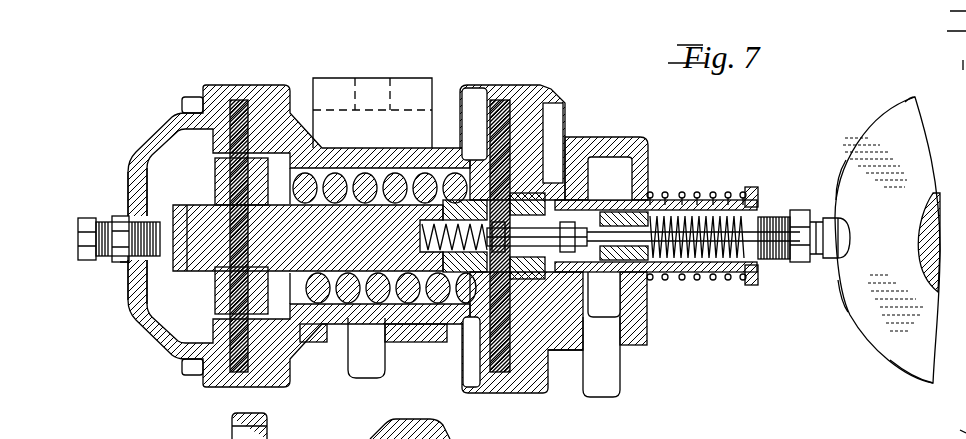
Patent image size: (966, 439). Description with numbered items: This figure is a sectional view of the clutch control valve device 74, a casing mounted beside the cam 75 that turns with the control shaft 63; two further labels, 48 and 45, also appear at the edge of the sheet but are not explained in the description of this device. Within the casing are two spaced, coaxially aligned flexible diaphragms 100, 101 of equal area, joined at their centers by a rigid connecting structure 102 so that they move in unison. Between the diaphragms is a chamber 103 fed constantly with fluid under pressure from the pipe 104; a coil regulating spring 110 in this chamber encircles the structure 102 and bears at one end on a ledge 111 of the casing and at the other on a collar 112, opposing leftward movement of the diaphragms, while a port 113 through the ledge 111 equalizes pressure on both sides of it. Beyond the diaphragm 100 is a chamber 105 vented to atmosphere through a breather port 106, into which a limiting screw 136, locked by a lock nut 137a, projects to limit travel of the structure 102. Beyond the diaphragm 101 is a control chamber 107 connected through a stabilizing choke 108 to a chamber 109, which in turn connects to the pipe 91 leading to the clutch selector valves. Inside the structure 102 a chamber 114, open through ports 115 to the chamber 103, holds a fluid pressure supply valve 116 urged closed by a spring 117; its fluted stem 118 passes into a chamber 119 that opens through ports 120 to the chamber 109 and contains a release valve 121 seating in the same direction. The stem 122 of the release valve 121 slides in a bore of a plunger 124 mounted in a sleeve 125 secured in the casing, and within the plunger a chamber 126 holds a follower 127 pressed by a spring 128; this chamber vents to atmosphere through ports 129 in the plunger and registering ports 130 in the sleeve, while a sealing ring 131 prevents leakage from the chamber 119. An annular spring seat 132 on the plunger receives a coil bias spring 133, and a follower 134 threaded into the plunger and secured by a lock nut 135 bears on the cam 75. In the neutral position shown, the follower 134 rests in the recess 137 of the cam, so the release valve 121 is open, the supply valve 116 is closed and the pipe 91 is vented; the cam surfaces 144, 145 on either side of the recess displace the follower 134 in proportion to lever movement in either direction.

The flexible diaphragm 100 is at (212, 337).
The chamber 105 is at (153, 288).
The breather port 106 is at (157, 347).
The clutch control valve device 74 is at (191, 389).
The limiting screw 136 is at (103, 217).
The lock nut 137a is at (127, 260).
The port 113 is at (291, 162).
The ledge 111 is at (308, 156).
The coil regulating spring 110 is at (360, 174).
The rigid connecting structure 102 is at (330, 335).
The pipe 104 is at (352, 362).
The chamber 103 is at (393, 344).
The ports 115 is at (420, 235).
The collar 112 is at (473, 173).
The flexible diaphragm 101 is at (530, 330).
The control chamber 107 is at (547, 140).
The stabilizing choke 108 is at (570, 163).
The chamber 109 is at (613, 160).
The fluted stem 118 is at (537, 225).
The release valve 121 is at (548, 285).
The chamber 119 is at (532, 310).
The stem 122 is at (612, 282).
The pipe 91 is at (590, 383).
The fluid pressure supply valve 116 is at (465, 330).
The spring 117 is at (437, 275).
The chamber 114 is at (473, 325).
The ports 120 is at (595, 203).
The sleeve 125 is at (655, 193).
The plunger 124 is at (673, 203).
The ports 130 is at (693, 193).
The ports 129 is at (706, 203).
The annular spring seat 132 is at (750, 187).
The chamber 126 is at (640, 312).
The follower 127 is at (682, 279).
The sealing ring 131 is at (658, 279).
The spring 128 is at (725, 279).
The coil bias spring 133 is at (738, 286).
The lock nut 135 is at (798, 210).
The follower 134 is at (820, 260).
The recess 137 is at (840, 233).
The control shaft 63 is at (920, 238).
The surface 145 is at (836, 170).
The peripheral surface 144 is at (840, 305).
The cam 75 is at (897, 358).
The frame 48 is at (948, 80).
The frame member 45 is at (960, 432).